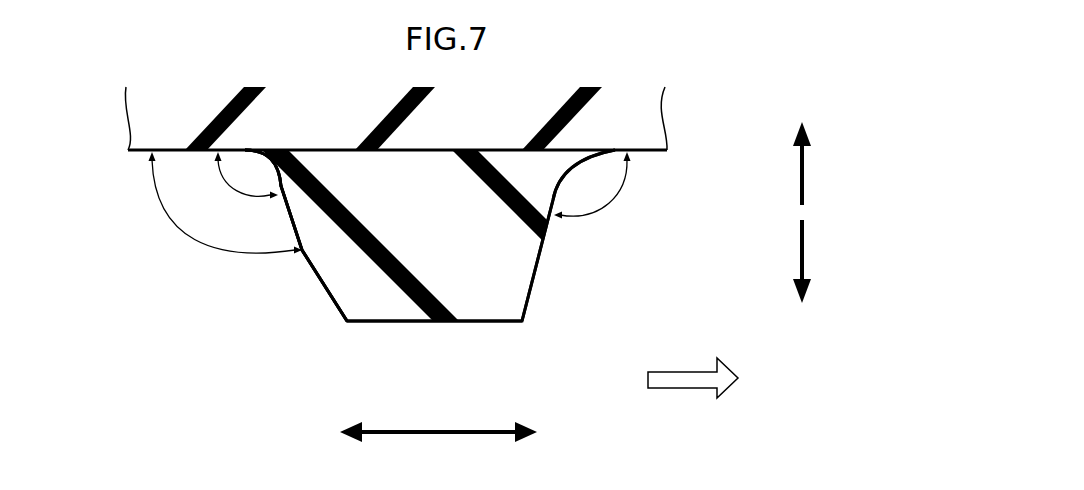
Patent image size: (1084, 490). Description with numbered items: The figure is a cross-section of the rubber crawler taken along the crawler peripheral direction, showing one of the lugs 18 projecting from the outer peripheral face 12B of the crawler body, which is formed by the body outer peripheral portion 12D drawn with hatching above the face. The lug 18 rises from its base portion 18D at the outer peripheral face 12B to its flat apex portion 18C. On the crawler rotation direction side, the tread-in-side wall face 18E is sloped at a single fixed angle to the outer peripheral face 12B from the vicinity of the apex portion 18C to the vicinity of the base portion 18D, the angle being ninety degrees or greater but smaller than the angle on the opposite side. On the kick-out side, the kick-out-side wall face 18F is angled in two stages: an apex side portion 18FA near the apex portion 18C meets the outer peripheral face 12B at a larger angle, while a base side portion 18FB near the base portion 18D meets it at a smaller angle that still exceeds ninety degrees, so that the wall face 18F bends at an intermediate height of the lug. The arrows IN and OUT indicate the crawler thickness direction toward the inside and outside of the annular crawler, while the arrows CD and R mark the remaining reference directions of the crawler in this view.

The outer peripheral face 12B is at (648, 153).
The body outer peripheral portion 12D is at (648, 107).
The lug 18 is at (387, 328).
The apex portion 18C is at (470, 323).
The base portion 18D is at (618, 150).
The tread-in-side wall face 18E is at (535, 268).
The kick-out-side wall face 18F is at (295, 350).
The apex side portion 18FA is at (319, 278).
The base side portion 18FB is at (283, 206).
The arrow IN direction IN is at (805, 170).
The arrow OUT direction OUT is at (805, 248).
The circumferential direction CD is at (435, 434).
The radial direction R is at (680, 388).